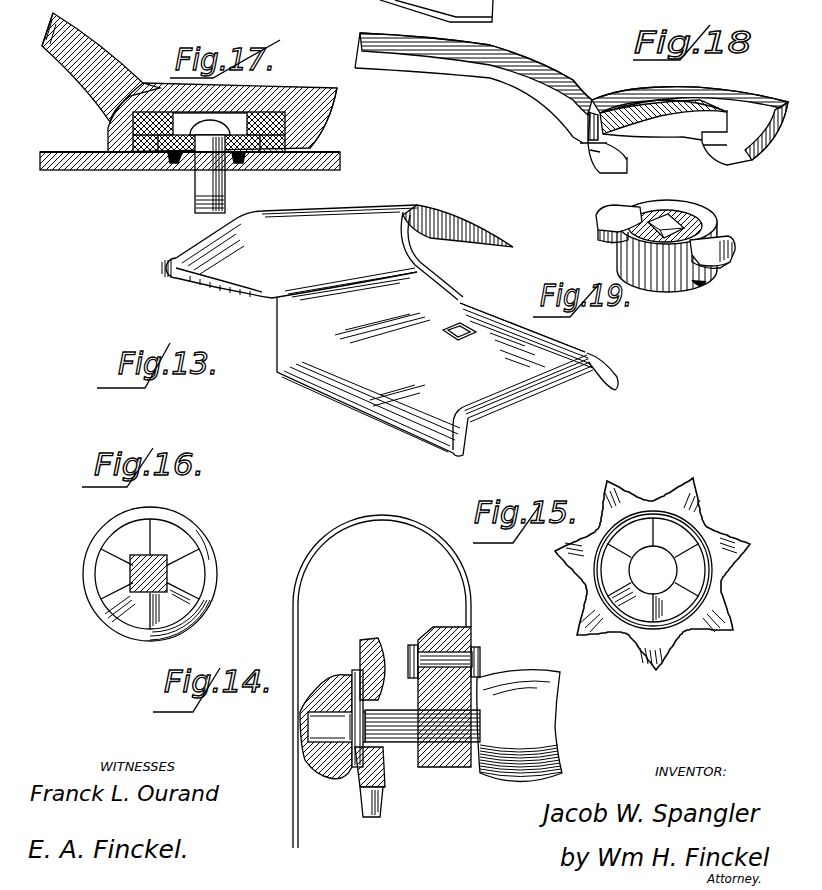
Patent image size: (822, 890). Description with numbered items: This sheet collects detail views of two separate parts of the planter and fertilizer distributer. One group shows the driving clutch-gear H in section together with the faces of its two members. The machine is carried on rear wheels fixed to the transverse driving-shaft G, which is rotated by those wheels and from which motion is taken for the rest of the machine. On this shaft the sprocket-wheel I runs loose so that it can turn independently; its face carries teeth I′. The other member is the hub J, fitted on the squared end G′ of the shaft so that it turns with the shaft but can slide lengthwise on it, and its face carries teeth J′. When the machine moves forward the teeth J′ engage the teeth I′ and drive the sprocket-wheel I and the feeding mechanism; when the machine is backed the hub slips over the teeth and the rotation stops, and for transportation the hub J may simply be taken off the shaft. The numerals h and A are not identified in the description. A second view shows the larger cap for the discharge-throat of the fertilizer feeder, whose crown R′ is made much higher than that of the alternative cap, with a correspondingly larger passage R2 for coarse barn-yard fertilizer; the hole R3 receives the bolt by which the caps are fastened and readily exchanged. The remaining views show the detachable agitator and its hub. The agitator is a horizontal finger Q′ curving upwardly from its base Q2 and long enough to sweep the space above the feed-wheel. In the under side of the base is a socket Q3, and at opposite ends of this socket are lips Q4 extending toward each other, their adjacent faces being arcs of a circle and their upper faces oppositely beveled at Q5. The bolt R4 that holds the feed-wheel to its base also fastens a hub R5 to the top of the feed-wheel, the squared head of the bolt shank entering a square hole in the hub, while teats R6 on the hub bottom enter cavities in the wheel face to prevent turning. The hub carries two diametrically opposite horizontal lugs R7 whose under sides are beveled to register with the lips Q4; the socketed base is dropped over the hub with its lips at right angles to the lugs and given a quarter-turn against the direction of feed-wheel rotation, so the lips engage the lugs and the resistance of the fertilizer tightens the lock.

In FIG. 17, the agitator finger Q′ is at (101, 67).
In FIG. 18, the agitator finger Q′ is at (528, 56).
In FIG. 17, the agitator base Q2 is at (335, 118).
In FIG. 18, the agitator base Q2 is at (750, 157).
In FIG. 18, the recess or socket Q3 is at (694, 136).
In FIG. 17, the lips Q4 is at (318, 143).
In FIG. 18, the lips Q4 is at (597, 170).
In FIG. 18, the beveled upper faces of lips Q5 is at (628, 150).
In FIG. 13, the crown of cap R′ is at (312, 274).
In FIG. 13, the passage R2 is at (458, 237).
In FIG. 13, the bolt-hole R3 is at (450, 340).
In FIG. 17, the bolt R4 is at (200, 176).
In FIG. 17, the hub R5 is at (160, 112).
In FIG. 19, the hub R5 is at (680, 283).
In FIG. 17, the teats R6 is at (175, 160).
In FIG. 19, the teats R6 is at (702, 285).
In FIG. 17, the lugs R7 is at (290, 108).
In FIG. 19, the lugs R7 is at (733, 253).
In FIG. 16, the hub J is at (150, 580).
In FIG. 14, the hub J is at (328, 763).
In FIG. 16, the teeth of hub J′ is at (177, 613).
In FIG. 14, the guard frame h is at (300, 603).
In FIG. 14, the bearing block A is at (450, 627).
In FIG. 14, the shaft G is at (422, 726).
In FIG. 14, the squared end of shaft G′ is at (327, 728).
In FIG. 14, the clutch-gear H is at (348, 740).
In FIG. 15, the sprocket-wheel I is at (645, 660).
In FIG. 14, the sprocket-wheel I is at (384, 786).
In FIG. 15, the teeth of sprocket-wheel I′ is at (653, 570).
In FIG. 14, the teeth of sprocket-wheel I′ is at (358, 670).